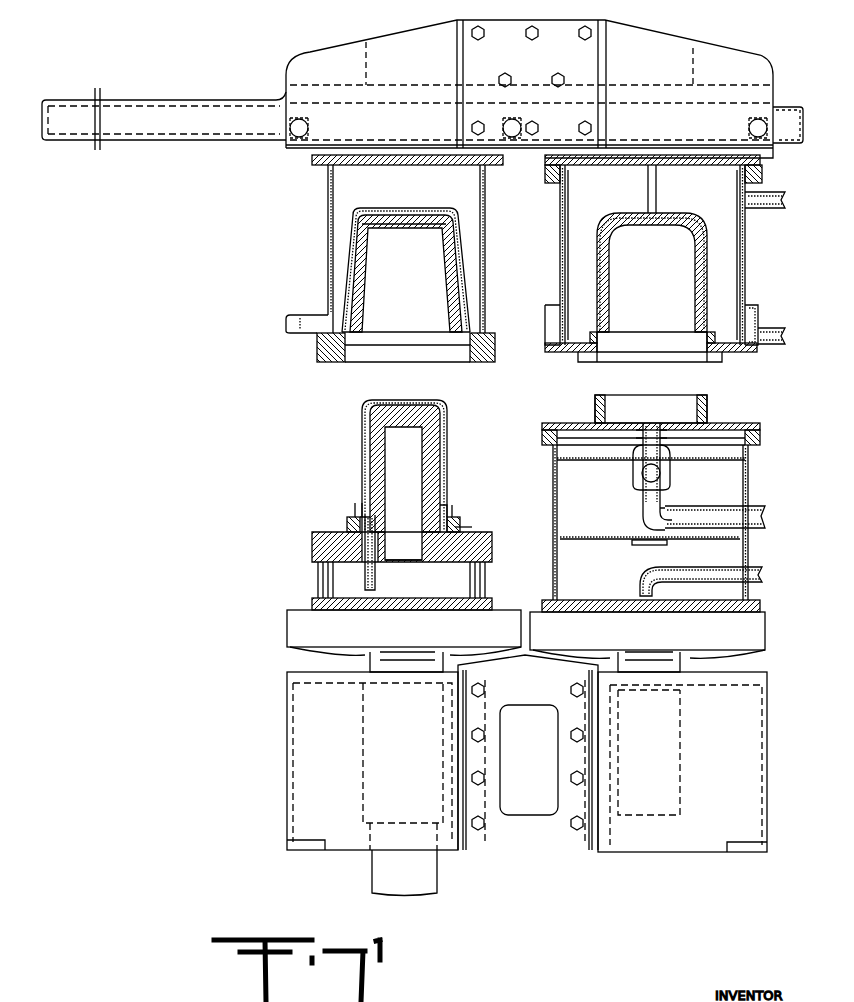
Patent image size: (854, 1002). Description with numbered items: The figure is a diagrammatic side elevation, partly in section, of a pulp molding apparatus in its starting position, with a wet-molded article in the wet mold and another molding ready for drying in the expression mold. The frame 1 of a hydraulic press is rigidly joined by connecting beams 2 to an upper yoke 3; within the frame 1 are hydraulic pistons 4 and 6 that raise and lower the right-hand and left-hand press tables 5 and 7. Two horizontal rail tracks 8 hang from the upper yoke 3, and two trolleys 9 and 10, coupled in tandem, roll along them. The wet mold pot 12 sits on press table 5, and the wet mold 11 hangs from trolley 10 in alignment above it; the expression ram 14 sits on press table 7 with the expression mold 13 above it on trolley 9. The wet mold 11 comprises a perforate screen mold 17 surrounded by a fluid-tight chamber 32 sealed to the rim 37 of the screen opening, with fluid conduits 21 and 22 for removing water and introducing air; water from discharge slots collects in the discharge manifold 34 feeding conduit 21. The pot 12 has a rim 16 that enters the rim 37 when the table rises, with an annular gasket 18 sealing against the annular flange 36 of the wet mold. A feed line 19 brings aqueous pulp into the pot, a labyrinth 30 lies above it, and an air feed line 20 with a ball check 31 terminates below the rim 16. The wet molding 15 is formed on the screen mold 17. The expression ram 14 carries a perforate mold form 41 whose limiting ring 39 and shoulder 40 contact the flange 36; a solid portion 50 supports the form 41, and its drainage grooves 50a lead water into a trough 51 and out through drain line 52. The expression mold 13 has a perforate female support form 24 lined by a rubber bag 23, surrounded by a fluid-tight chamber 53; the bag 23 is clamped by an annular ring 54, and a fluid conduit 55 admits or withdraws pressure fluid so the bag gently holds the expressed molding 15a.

The frame 1 is at (767, 770).
The connecting beams 2 is at (515, 838).
The upper yoke 3 is at (756, 68).
The hydraulic piston 4 is at (676, 770).
The right-hand press table 5 is at (765, 637).
The hydraulic piston 6 is at (362, 745).
The left-hand press table 7 is at (295, 630).
The rail tracks 8 is at (244, 97).
The trolley 9 is at (300, 162).
The trolley 10 is at (540, 160).
The wet mold 11 is at (735, 252).
The wet mold pot 12 is at (750, 482).
The expression mold 13 is at (325, 215).
The expression ram 14 is at (306, 549).
The wet molding 15 is at (605, 262).
The expressed molding 15a is at (438, 230).
The rim 16 is at (707, 405).
The screen mold 17 is at (604, 260).
The annular gasket 18 is at (578, 410).
The feed line 19 is at (760, 578).
The air feed line 20 is at (765, 535).
The fluid conduit 21 is at (775, 348).
The fluid conduit 22 is at (775, 192).
The rubber bag 23 is at (452, 258).
The perforate female support form 24 is at (424, 204).
The labyrinth 30 is at (608, 527).
The ball check 31 is at (634, 492).
The fluid-tight chamber 32 is at (560, 256).
The discharge manifold 34 is at (762, 305).
The annular flange 36 is at (715, 362).
The rim 37 is at (712, 334).
The limiting ring 39 is at (471, 523).
The shoulder 40 is at (478, 504).
The perforate mold form 41 is at (445, 452).
The solid portion 50 is at (440, 480).
The drainage grooves 50a is at (420, 400).
The trough 51 is at (352, 506).
The drain line 52 is at (375, 578).
The fluid-tight chamber 53 is at (328, 244).
The annular ring 54 is at (335, 364).
The fluid conduit 55 is at (296, 333).